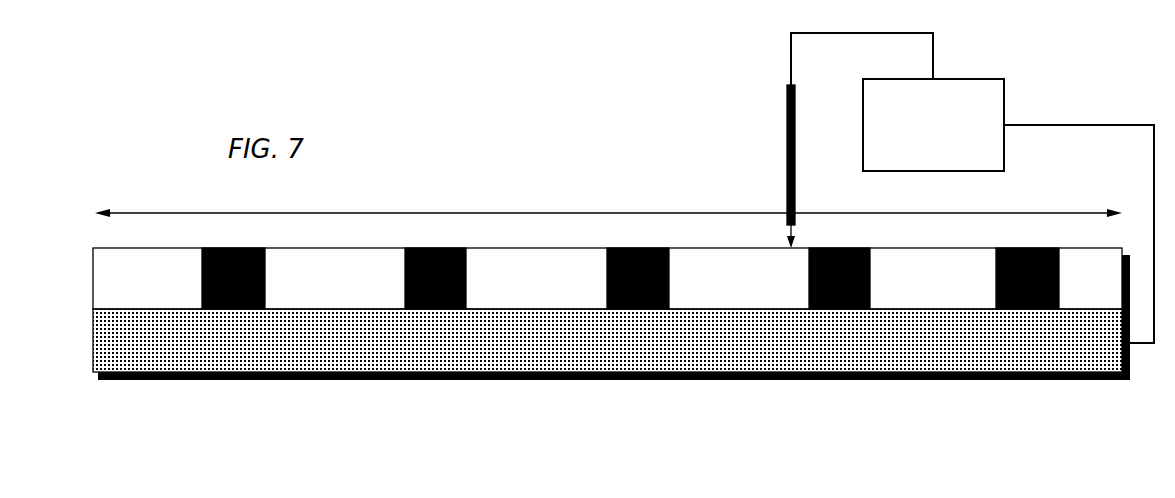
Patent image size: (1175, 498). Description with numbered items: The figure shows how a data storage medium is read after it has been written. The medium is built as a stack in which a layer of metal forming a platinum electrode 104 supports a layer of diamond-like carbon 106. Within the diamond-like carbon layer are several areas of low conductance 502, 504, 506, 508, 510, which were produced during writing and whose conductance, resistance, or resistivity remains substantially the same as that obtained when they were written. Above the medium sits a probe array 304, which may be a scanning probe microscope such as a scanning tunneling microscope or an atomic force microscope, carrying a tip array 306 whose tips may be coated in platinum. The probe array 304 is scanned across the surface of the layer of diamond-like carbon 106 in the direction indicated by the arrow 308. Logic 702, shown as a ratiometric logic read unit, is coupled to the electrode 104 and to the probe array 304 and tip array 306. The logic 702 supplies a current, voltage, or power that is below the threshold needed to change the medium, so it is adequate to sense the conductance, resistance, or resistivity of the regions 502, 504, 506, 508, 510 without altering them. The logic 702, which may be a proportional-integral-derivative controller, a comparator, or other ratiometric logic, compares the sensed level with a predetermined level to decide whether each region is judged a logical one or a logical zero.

The electrode 104 is at (93, 342).
The layer of diamond-like carbon 106 is at (93, 280).
The probe array 304 is at (785, 120).
The tip array 306 is at (788, 242).
The arrow 308 is at (597, 213).
The area of low conductance 502 is at (222, 309).
The area of low conductance 504 is at (433, 309).
The area of low conductance 506 is at (655, 309).
The area of low conductance 508 is at (848, 309).
The area of low conductance 510 is at (1035, 309).
The logic 702 is at (1005, 73).